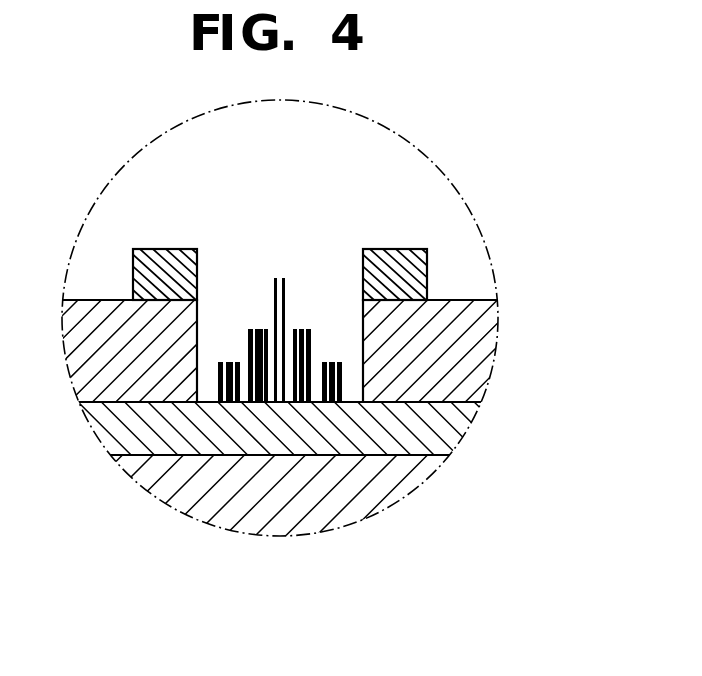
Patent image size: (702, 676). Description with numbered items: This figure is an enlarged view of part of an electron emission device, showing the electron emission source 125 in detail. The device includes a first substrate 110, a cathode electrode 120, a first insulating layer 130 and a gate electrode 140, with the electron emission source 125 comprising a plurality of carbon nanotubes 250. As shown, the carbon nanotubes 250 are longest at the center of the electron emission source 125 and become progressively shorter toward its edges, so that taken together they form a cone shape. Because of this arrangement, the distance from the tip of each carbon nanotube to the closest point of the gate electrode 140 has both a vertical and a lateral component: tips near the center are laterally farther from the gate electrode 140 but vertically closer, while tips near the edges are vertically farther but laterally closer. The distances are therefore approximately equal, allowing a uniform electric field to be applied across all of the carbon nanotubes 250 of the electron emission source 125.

The first substrate 110 is at (280, 497).
The cathode electrode 120 is at (280, 428).
The electron emission source 125 is at (258, 308).
The first insulating layer 130 is at (280, 351).
The gate electrode 140 is at (280, 274).
The carbon nanotubes 250 is at (343, 373).